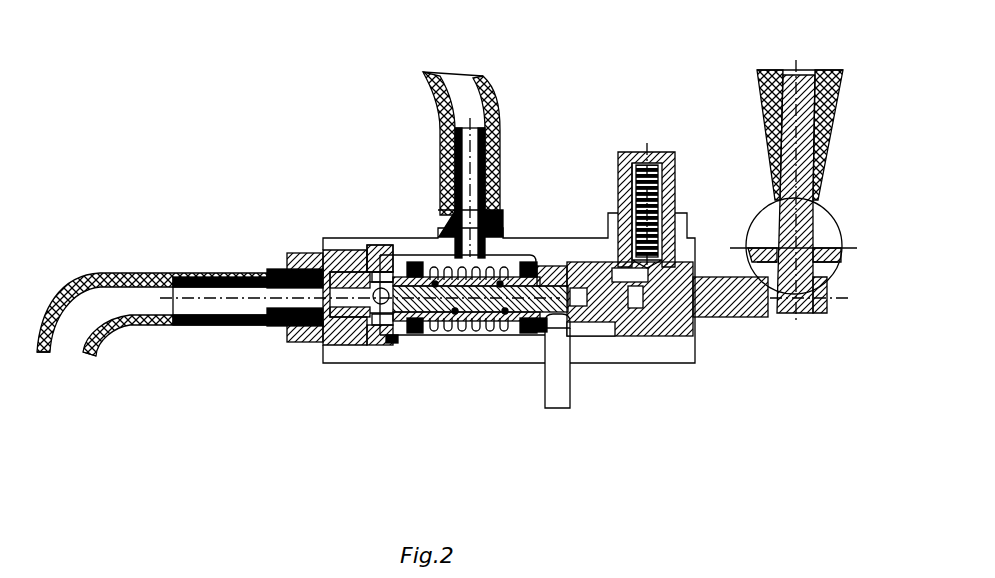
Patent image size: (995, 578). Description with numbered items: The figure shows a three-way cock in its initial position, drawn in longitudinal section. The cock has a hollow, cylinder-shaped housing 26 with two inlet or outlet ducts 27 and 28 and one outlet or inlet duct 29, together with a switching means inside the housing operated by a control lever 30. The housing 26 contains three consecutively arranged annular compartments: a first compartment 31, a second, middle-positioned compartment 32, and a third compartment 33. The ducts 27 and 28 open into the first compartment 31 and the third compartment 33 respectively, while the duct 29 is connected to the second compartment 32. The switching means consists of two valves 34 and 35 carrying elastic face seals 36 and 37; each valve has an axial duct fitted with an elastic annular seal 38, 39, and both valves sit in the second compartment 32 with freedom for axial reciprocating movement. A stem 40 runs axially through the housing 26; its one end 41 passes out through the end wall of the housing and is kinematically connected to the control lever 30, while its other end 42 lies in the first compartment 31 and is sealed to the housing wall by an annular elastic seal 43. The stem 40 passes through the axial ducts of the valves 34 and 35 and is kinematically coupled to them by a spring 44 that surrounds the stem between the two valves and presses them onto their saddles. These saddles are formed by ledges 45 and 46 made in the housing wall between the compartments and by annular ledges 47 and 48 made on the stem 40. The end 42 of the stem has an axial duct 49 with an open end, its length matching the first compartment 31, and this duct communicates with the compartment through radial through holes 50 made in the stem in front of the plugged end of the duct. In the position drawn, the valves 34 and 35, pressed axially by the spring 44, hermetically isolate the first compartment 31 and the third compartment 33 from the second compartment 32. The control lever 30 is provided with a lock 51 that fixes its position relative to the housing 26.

The hollow housing 26 is at (412, 250).
The inlet or outlet duct 27 is at (78, 290).
The inlet or outlet duct 28 is at (500, 110).
The outlet or inlet duct 29 is at (558, 390).
The control lever 30 is at (790, 80).
The first compartment 31 is at (373, 252).
The second compartment 32 is at (437, 258).
The third compartment 33 is at (543, 265).
The valve 34 is at (423, 337).
The valve 35 is at (543, 412).
The elastic face seal 36 is at (413, 337).
The elastic face seal 37 is at (520, 266).
The elastic annular seal 38 is at (437, 335).
The elastic annular seal 39 is at (507, 330).
The stem 40 is at (465, 335).
The end of the stem 41 is at (747, 315).
The end of the stem 42 is at (317, 255).
The annular elastic seal 43 is at (322, 362).
The spring 44 is at (490, 268).
The ledge 45 is at (400, 343).
The ledge 46 is at (560, 272).
The annular ledge 47 is at (385, 347).
The annular ledge 48 is at (558, 323).
The axial duct 49 is at (297, 338).
The radial through holes 50 is at (348, 252).
The lock 51 is at (667, 163).